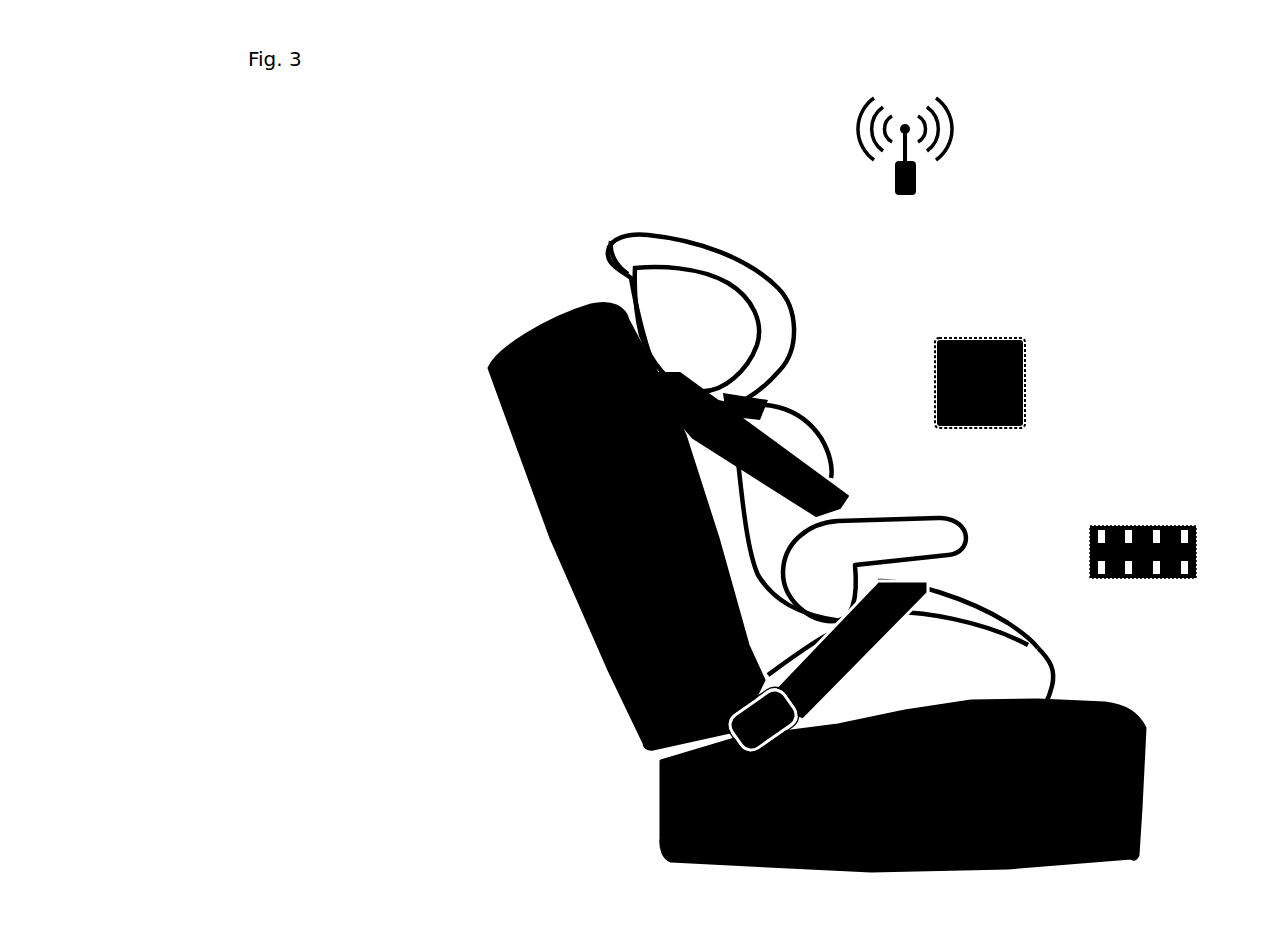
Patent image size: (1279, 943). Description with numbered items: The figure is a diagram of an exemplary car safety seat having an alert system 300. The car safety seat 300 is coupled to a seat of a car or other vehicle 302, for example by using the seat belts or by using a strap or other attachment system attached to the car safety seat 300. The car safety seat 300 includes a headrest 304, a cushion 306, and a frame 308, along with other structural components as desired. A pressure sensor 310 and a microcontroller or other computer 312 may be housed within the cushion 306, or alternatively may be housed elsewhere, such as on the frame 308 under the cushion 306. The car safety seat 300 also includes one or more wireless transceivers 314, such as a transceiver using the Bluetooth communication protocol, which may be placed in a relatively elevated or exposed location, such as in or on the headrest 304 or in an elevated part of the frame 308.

The car safety seat having an alert system 300 is at (598, 243).
The seat of a car or other vehicle 302 is at (477, 356).
The headrest 304 is at (778, 275).
The cushion 306 is at (1020, 618).
The frame 308 is at (1049, 660).
The pressure sensor 310 is at (970, 590).
The microcontroller 312 is at (920, 580).
The wireless transceiver 314 is at (714, 393).